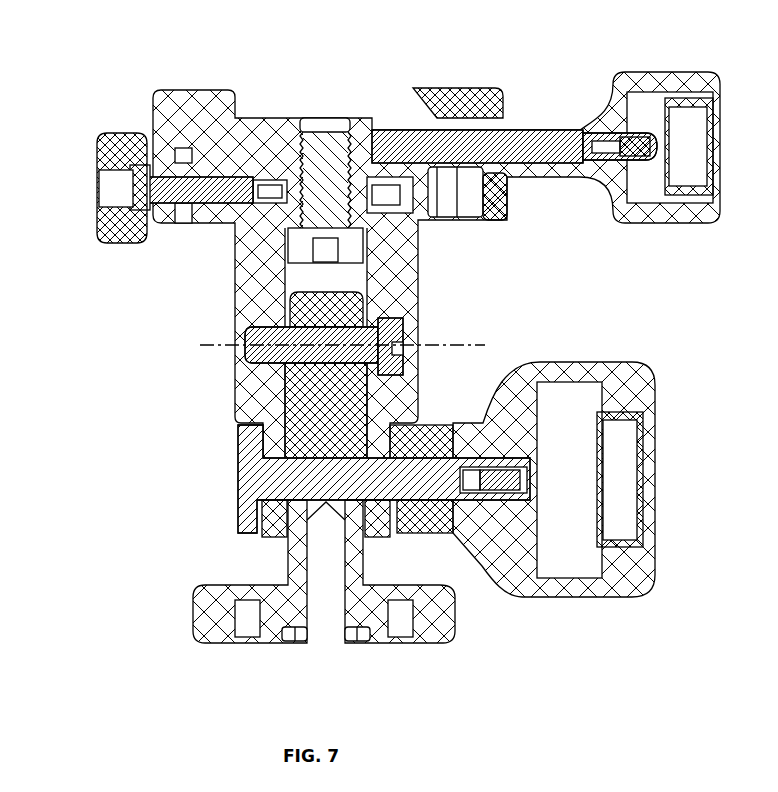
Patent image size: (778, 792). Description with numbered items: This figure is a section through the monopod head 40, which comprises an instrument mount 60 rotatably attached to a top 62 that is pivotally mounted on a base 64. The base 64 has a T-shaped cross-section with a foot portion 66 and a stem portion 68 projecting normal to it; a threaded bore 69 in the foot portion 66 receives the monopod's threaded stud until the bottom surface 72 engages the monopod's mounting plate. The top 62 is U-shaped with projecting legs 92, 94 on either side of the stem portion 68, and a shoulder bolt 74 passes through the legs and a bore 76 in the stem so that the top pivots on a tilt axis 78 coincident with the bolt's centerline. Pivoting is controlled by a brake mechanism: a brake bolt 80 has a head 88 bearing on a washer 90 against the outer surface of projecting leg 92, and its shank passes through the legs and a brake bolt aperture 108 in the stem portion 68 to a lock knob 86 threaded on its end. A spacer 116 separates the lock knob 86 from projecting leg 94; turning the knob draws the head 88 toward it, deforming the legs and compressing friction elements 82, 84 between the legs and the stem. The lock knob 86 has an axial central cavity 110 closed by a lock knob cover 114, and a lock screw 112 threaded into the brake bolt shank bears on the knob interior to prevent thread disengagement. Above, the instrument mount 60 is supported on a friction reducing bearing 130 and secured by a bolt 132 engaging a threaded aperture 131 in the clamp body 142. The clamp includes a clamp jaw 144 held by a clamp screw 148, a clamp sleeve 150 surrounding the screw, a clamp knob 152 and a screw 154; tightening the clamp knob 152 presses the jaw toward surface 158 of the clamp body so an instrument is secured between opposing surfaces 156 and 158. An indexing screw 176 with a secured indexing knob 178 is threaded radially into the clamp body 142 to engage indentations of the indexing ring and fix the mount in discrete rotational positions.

The monopod head 40 is at (396, 365).
The instrument mount 60 is at (419, 243).
The top 62 is at (346, 344).
The base 64 is at (318, 602).
The foot portion 66 is at (346, 597).
The stem portion 68 is at (366, 555).
The threaded bore 69 is at (322, 648).
The bottom surface 72 is at (422, 648).
The shoulder bolt 74 is at (407, 328).
The bore 76 is at (300, 304).
The tilt axis 78 is at (470, 346).
The brake bolt 80 is at (383, 496).
The friction element 82 is at (368, 541).
The friction element 84 is at (288, 533).
The lock knob 86 is at (580, 496).
The head 88 is at (238, 474).
The washer 90 is at (262, 417).
The projecting leg 92 is at (233, 360).
The projecting leg 94 is at (418, 388).
The brake bolt aperture 108 is at (292, 548).
The axial central cavity 110 is at (578, 570).
The lock screw 112 is at (533, 470).
The lock knob cover 114 is at (652, 458).
The spacer 116 is at (428, 428).
The friction reducing bearing 130 is at (276, 178).
The threaded aperture 131 is at (343, 120).
The bolt 132 is at (326, 113).
The clamp body 142 is at (214, 90).
The clamp jaw 144 is at (483, 90).
The clamp screw 148 is at (536, 180).
The clamp sleeve 150 is at (536, 113).
The clamp knob 152 is at (698, 129).
The screw 154 is at (660, 150).
The opposing surface 156 is at (417, 111).
The surface 158 is at (240, 112).
The indexing screw 176 is at (204, 222).
The indexing knob 178 is at (110, 244).